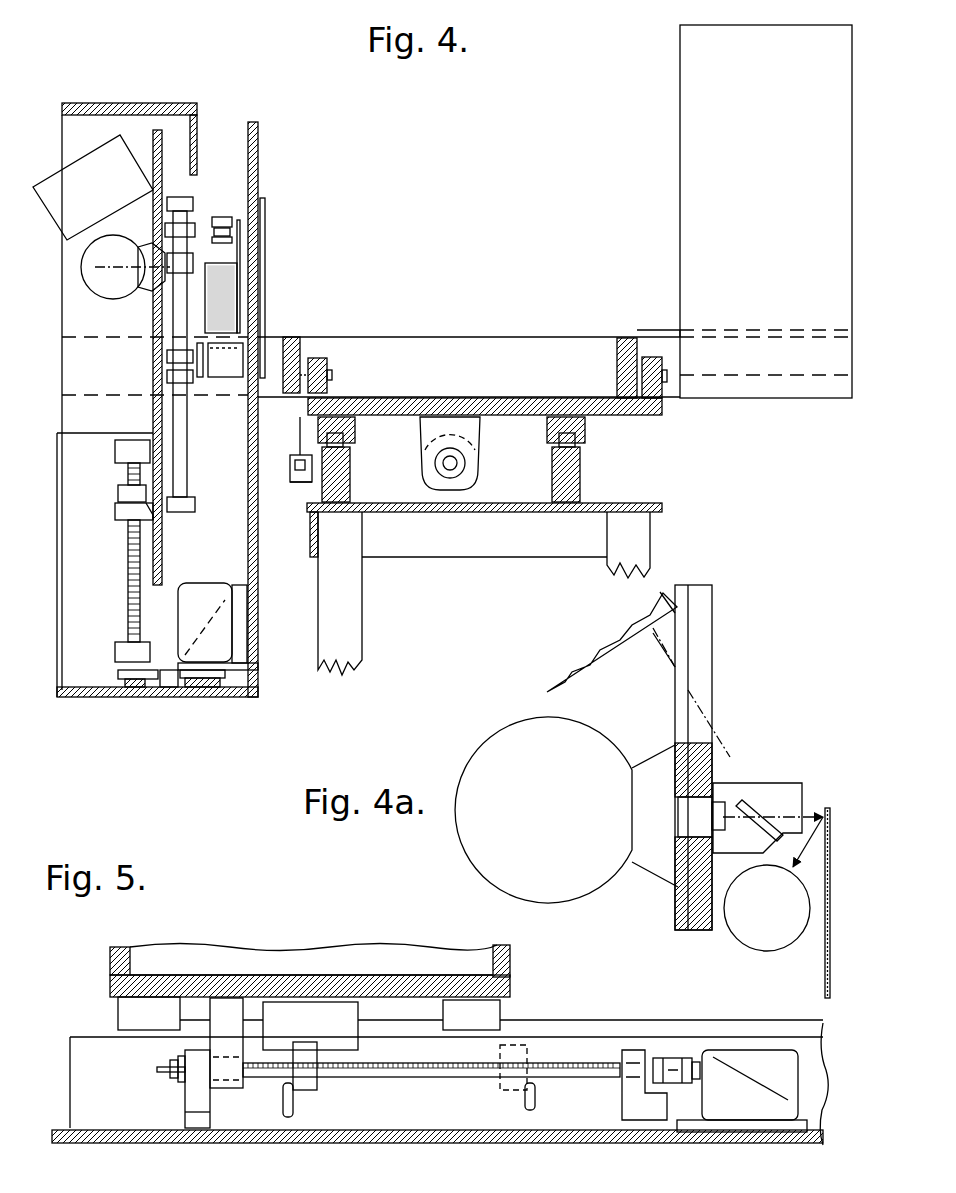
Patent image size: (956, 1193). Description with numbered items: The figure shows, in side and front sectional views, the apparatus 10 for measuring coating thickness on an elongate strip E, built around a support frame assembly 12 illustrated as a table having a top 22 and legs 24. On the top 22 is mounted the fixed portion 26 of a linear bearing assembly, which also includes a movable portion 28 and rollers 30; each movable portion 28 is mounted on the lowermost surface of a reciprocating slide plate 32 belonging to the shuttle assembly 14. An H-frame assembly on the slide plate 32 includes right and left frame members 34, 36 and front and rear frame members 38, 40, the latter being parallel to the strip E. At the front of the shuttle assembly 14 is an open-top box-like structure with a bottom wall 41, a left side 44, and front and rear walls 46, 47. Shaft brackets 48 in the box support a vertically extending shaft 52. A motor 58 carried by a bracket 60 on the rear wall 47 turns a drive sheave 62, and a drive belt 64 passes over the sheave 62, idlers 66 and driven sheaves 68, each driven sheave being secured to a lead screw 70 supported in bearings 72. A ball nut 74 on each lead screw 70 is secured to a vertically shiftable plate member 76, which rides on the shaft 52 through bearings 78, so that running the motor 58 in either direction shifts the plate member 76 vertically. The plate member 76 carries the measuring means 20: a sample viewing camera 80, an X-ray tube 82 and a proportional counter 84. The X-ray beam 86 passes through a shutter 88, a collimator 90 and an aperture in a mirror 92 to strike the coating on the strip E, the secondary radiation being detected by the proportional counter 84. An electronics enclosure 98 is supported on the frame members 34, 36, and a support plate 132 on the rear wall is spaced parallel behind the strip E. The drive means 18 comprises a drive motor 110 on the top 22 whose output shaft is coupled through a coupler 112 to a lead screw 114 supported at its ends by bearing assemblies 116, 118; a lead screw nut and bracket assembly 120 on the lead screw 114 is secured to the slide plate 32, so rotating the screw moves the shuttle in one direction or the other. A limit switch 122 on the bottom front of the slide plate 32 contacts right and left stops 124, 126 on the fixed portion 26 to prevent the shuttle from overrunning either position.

In FIG. 4, the apparatus 10 is at (517, 160).
In FIG. 4, the support frame assembly 12 is at (665, 493).
In FIG. 4, the shuttle assembly 14 is at (128, 712).
In FIG. 5, the drive means 18 is at (590, 1010).
In FIG. 4, the measuring means 20 is at (80, 140).
In FIG. 4, the top 22 is at (600, 503).
In FIG. 5, the top 22 is at (85, 1130).
In FIG. 4, the legs 24 is at (607, 532).
In FIG. 4, the fixed portion of linear bearing assembly 26 is at (350, 478).
In FIG. 5, the fixed portion of linear bearing assembly 26 is at (85, 1037).
In FIG. 4, the movable portion of linear bearing assembly 28 is at (355, 432).
In FIG. 5, the movable portion of linear bearing assembly 28 is at (118, 1010).
In FIG. 4, the rollers 30 is at (343, 448).
In FIG. 4, the slide plate 32 is at (640, 417).
In FIG. 5, the slide plate 32 is at (252, 975).
In FIG. 5, the right front-to-rear frame member 34 is at (510, 958).
In FIG. 4, the left front-to-rear frame member 36 is at (483, 337).
In FIG. 5, the left front-to-rear frame member 36 is at (110, 958).
In FIG. 4, the front frame member 38 is at (295, 337).
In FIG. 4, the rear frame member 40 is at (627, 338).
In FIG. 5, the rear frame member 40 is at (420, 947).
In FIG. 4, the bottom wall 41 is at (75, 700).
In FIG. 4, the left side 44 is at (90, 580).
In FIG. 4, the front wall 46 is at (64, 625).
In FIG. 4, the rear wall 47 is at (247, 600).
In FIG. 4, the shaft brackets 48 is at (185, 198).
In FIG. 4, the left vertically extending shaft 52 is at (187, 440).
In FIG. 4, the motor 58 is at (212, 583).
In FIG. 4, the bracket 60 is at (258, 632).
In FIG. 4, the drive sheave 62 is at (215, 690).
In FIG. 4, the drive belt 64 is at (258, 668).
In FIG. 4, the idlers 66 is at (172, 690).
In FIG. 4, the driven sheaves 68 is at (138, 690).
In FIG. 4, the lead screw 70 is at (128, 547).
In FIG. 4, the bearings 72 is at (115, 448).
In FIG. 4, the ball nut 74 is at (118, 492).
In FIG. 4, the vertically shiftable plate member 76 is at (162, 565).
In FIG. 4A, the vertically shiftable plate member 76 is at (675, 910).
In FIG. 4, the bearings 78 is at (195, 230).
In FIG. 4, the sample viewing camera 80 is at (93, 187).
In FIG. 4A, the sample viewing camera 80 is at (590, 665).
In FIG. 4, the X-ray tube 82 is at (118, 293).
In FIG. 4A, the X-ray tube 82 is at (505, 735).
In FIG. 4A, the proportional counter 84 is at (752, 950).
In FIG. 4A, the X-ray beam 86 is at (808, 810).
In FIG. 4A, the shutter 88 is at (678, 820).
In FIG. 4A, the collimator 90 is at (748, 795).
In FIG. 4A, the mirror 92 is at (752, 860).
In FIG. 4, the electronics enclosure 98 is at (680, 200).
In FIG. 5, the drive motor 110 is at (798, 1062).
In FIG. 5, the coupler 112 is at (672, 1058).
In FIG. 4, the lead screw 114 is at (450, 478).
In FIG. 5, the lead screw 114 is at (410, 1077).
In FIG. 4, the bearing assembly 116 is at (425, 480).
In FIG. 5, the bearing assembly 116 is at (185, 1105).
In FIG. 5, the bearing assembly 118 is at (622, 1100).
In FIG. 5, the lead screw nut and bracket assembly 120 is at (210, 1052).
In FIG. 5, the limit switch 122 is at (312, 1090).
In FIG. 5, the right stop 124 is at (535, 1110).
In FIG. 5, the left stop 126 is at (283, 1110).
In FIG. 4, the support plate 132 is at (265, 230).
In FIG. 4, the elongate strip E is at (265, 282).
In FIG. 4A, the elongate strip E is at (830, 947).